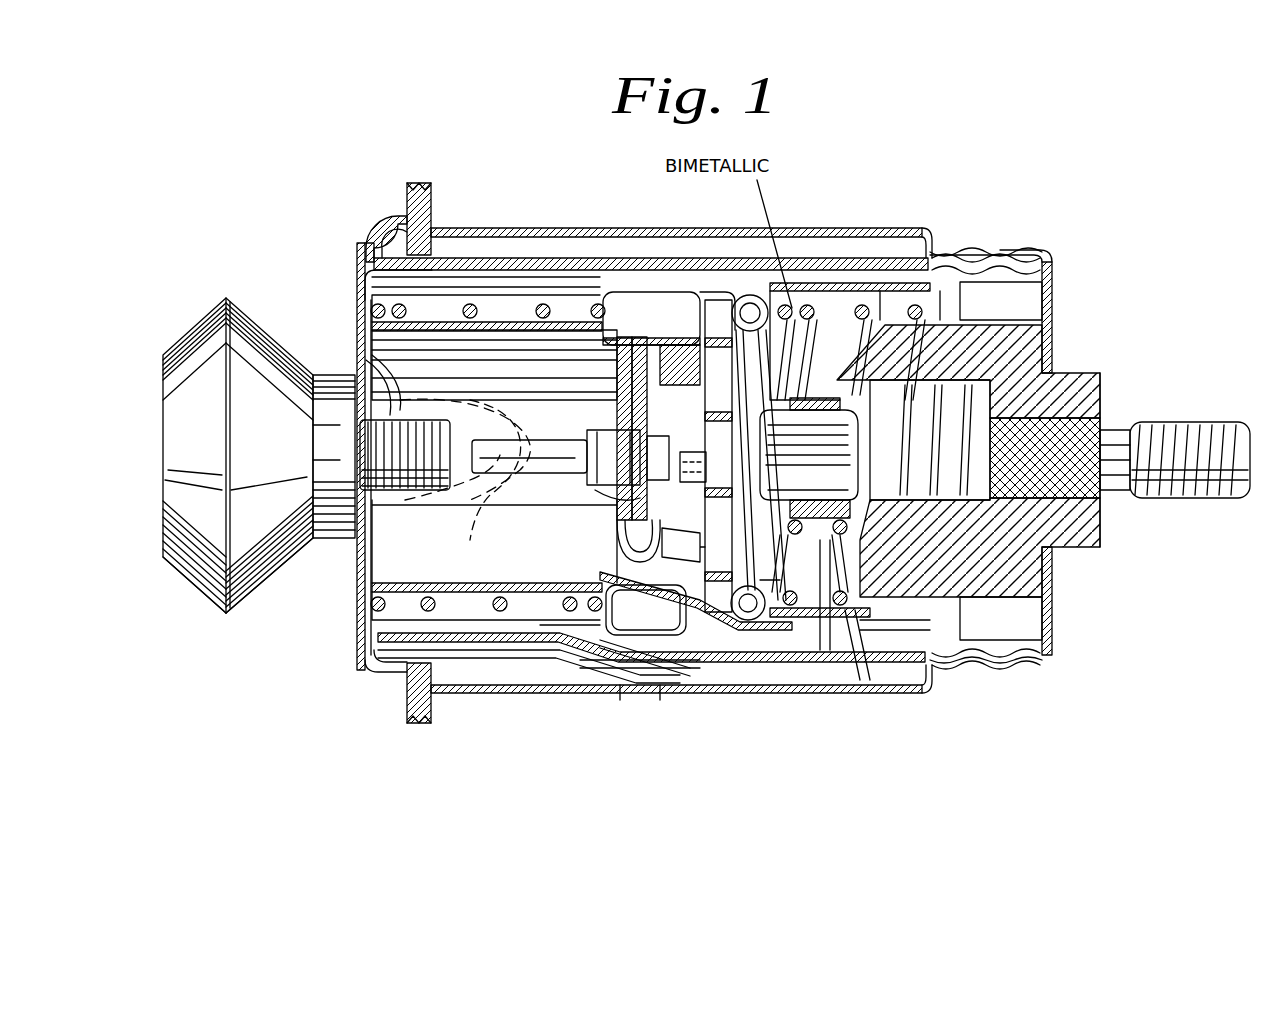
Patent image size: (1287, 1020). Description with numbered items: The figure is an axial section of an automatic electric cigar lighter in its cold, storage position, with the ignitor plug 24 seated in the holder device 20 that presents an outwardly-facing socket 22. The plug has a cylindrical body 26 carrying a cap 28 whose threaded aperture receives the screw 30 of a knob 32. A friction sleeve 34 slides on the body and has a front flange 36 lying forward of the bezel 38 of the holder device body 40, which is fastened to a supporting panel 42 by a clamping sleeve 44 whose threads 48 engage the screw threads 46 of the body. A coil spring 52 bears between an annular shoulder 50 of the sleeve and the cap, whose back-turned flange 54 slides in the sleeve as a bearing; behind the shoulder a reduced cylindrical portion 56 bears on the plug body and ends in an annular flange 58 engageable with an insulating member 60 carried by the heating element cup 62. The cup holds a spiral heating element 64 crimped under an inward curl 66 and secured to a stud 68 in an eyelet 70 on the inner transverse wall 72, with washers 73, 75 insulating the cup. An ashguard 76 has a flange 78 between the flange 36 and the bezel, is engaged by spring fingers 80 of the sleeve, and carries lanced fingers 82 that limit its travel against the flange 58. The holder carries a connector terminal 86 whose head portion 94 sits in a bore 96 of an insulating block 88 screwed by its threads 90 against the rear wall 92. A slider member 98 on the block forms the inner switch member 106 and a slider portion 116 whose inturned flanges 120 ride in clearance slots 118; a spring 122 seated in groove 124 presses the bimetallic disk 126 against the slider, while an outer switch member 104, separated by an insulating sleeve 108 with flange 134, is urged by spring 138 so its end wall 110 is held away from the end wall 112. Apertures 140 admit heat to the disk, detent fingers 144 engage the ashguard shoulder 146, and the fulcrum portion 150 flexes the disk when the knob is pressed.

The holder device 20 is at (378, 190).
The socket 22 is at (826, 283).
The ignitor plug 24 is at (348, 297).
The cylindrical body 26 is at (520, 595).
The cap 28 is at (358, 330).
The screw 30 is at (400, 505).
The knob 32 is at (185, 505).
The friction sleeve 34 is at (475, 648).
The out-turned front flange 36 is at (356, 250).
The bezel 38 is at (388, 700).
The holder device body 40 is at (622, 318).
The supporting panel 42 is at (420, 198).
The clamping sleeve 44 is at (505, 228).
The screw threads 46 is at (968, 668).
The cooperable threads 48 is at (948, 672).
The annular shoulder 50 is at (648, 665).
The helical coil spring 52 is at (437, 607).
The back-turned annular flange 54 is at (356, 640).
The cylindrical portion of reduced diameter 56 is at (628, 305).
The out-turned annular flange 58 is at (662, 325).
The insulating member 60 is at (722, 292).
The heating element cup 62 is at (708, 622).
The heating element 64 is at (744, 625).
The inward curl 66 is at (768, 622).
The stud 68 is at (560, 472).
The eyelet 70 is at (600, 500).
The inner transverse wall 72 is at (605, 392).
The insulating and centralizing washer 73 is at (605, 520).
The insulating and centralizing washer 75 is at (612, 540).
The ashguard member 76 is at (604, 668).
The flange 78 is at (375, 240).
The spring fingers 80 is at (470, 275).
The lanced fingers 82 is at (562, 655).
The connector terminal 86 is at (1193, 425).
The insulating block 88 is at (1070, 515).
The exterior threads 90 is at (1005, 260).
The rear transverse wall 92 is at (1050, 595).
The inner head portion 94 is at (1085, 388).
The bore 96 is at (942, 262).
The slider member 98 is at (880, 630).
The outer switch member 104 is at (850, 512).
The inner switch member 106 is at (805, 478).
The insulating sleeve 108 is at (783, 522).
The transverse end wall 110 is at (915, 440).
The end wall 112 is at (848, 455).
The slider portion 116 is at (847, 312).
The clearance slots 118 is at (1052, 300).
The inturned flange portions 120 is at (968, 300).
The helical coil spring 122 is at (803, 305).
The annular groove 124 is at (913, 300).
The bimetallic switch-actuator disk 126 is at (790, 582).
The flange 134 is at (800, 392).
The helical coil spring 138 is at (848, 685).
The apertures 140 is at (755, 540).
The detent fingers 144 is at (665, 705).
The annular shoulder 146 is at (678, 608).
The annular fulcrum portion 150 is at (888, 300).